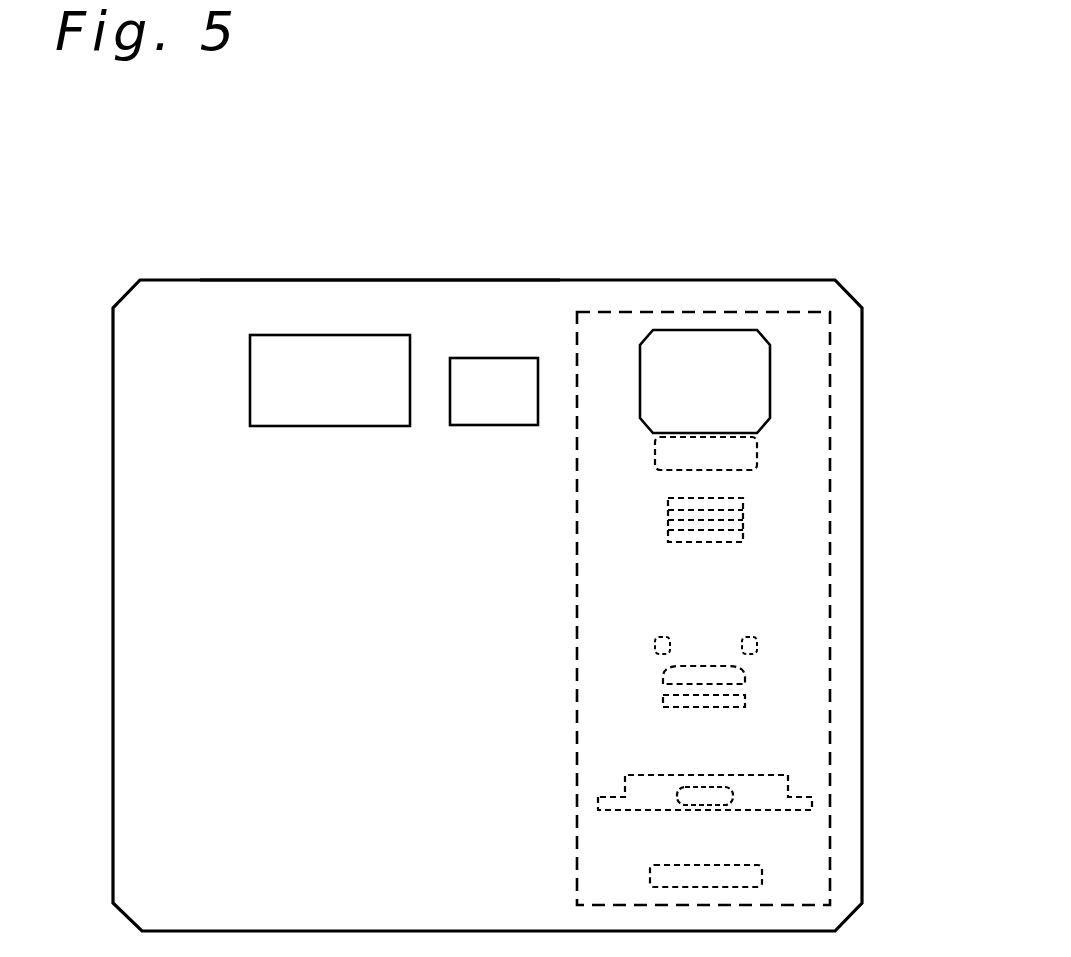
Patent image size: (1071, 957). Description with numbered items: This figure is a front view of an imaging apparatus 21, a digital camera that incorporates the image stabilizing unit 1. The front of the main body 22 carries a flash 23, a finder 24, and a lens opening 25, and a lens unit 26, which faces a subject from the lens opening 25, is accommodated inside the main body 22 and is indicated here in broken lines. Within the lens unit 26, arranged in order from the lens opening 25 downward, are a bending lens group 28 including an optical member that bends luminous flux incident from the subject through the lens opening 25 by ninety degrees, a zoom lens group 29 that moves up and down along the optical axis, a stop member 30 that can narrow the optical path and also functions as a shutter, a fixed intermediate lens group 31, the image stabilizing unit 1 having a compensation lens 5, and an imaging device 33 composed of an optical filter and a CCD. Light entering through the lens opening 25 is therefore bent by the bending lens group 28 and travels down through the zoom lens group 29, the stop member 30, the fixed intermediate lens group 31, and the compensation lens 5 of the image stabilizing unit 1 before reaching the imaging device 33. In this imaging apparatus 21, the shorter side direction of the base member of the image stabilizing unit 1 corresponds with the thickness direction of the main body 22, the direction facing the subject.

The imaging apparatus 21 is at (183, 234).
The main body 22 is at (257, 274).
The flash 23 is at (328, 335).
The finder 24 is at (493, 358).
The lens opening 25 is at (686, 330).
The lens unit 26 is at (726, 312).
The bending lens group 28 is at (757, 447).
The zoom lens group 29 is at (745, 522).
The stop member 30 is at (757, 641).
The fixed intermediate lens group 31 is at (745, 677).
The image stabilizing unit 1 is at (790, 789).
The compensation lens 5 is at (715, 810).
The imaging device 33 is at (762, 875).